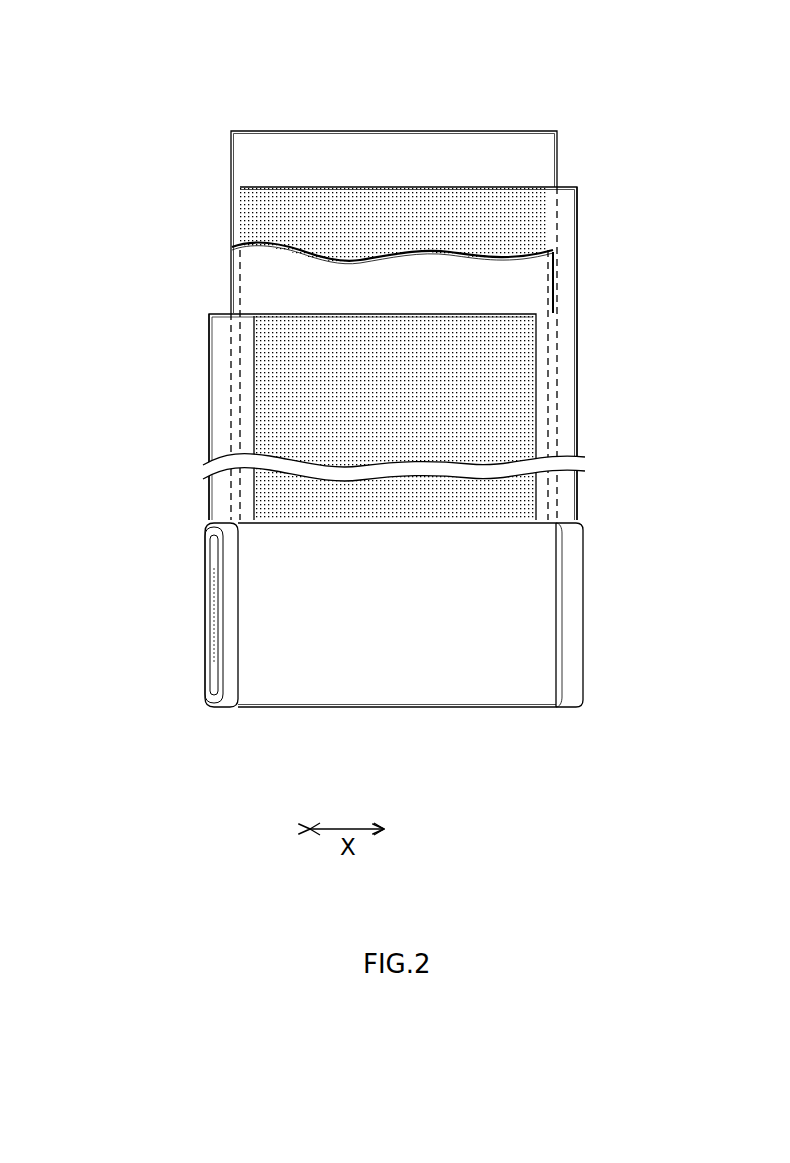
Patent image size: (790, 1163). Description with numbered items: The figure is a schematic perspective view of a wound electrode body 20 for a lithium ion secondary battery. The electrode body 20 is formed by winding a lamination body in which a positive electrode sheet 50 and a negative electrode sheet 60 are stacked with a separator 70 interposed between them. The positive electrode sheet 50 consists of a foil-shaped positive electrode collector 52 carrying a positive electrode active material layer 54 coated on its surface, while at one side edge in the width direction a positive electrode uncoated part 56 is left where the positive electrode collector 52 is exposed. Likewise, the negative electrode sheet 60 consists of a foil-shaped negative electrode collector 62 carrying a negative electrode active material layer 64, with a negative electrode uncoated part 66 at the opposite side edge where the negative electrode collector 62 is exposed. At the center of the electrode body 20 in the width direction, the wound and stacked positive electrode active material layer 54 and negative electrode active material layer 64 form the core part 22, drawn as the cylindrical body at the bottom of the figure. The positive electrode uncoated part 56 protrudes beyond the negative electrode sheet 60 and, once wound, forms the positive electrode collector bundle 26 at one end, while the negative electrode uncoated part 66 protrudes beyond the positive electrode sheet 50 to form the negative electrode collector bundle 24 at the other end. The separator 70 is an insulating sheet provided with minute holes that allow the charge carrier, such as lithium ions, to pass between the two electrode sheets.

The electrode body 20 is at (86, 38).
The core part 22 is at (453, 688).
The negative electrode collector bundle 24 is at (570, 688).
The positive electrode collector bundle 26 is at (222, 706).
The positive electrode sheet 50 is at (317, 417).
The positive electrode collector 52 is at (208, 448).
The positive electrode active material layer 54 is at (262, 326).
The positive electrode uncoated part 56 is at (220, 418).
The negative electrode sheet 60 is at (463, 353).
The negative electrode collector 62 is at (578, 360).
The negative electrode active material layer 64 is at (545, 210).
The negative electrode uncoated part 66 is at (567, 308).
The separator 70 is at (250, 165).